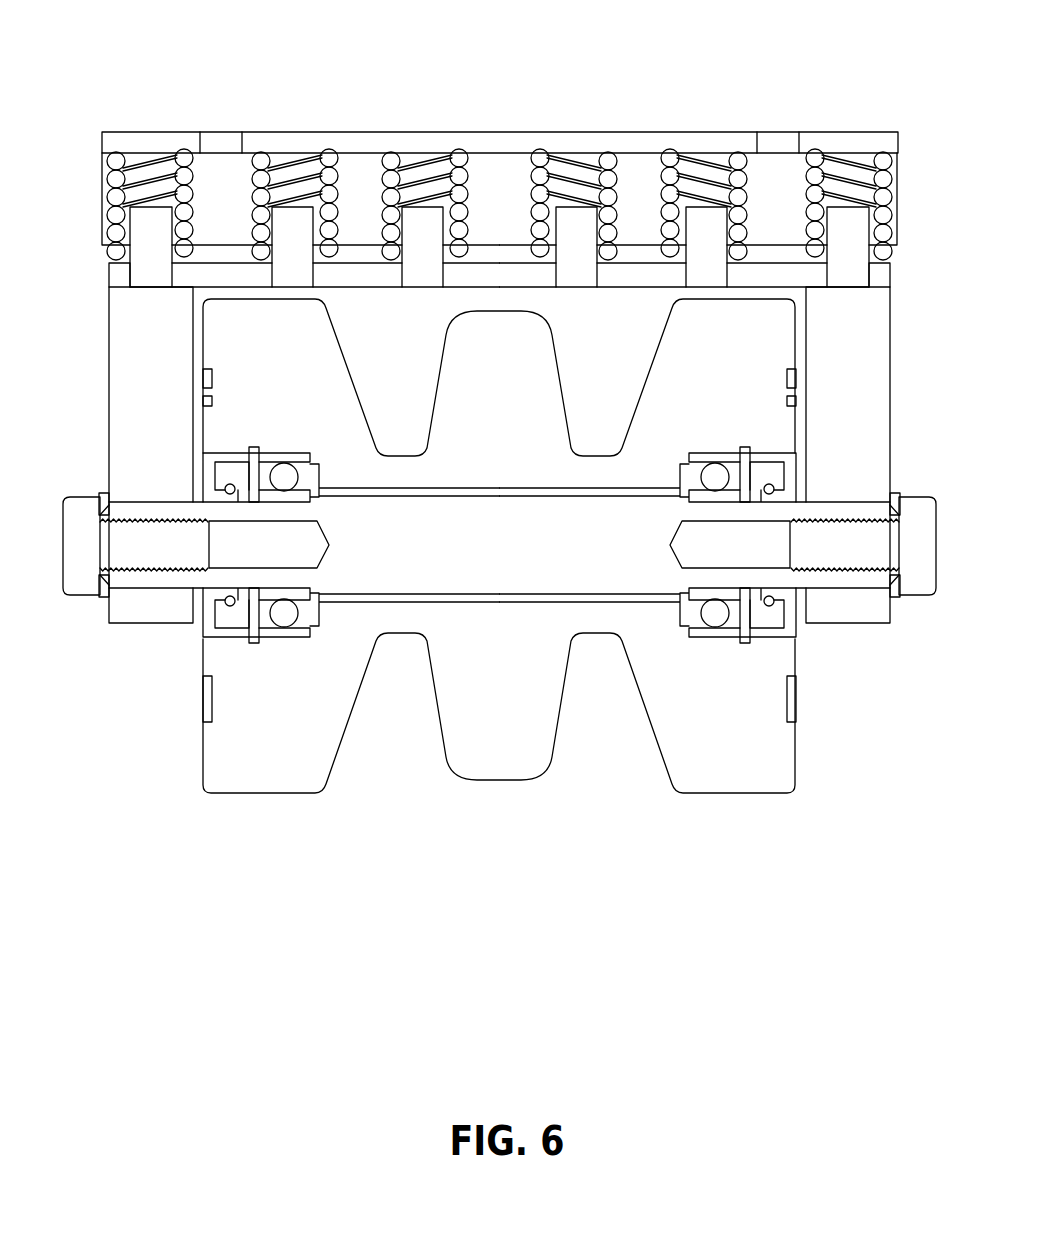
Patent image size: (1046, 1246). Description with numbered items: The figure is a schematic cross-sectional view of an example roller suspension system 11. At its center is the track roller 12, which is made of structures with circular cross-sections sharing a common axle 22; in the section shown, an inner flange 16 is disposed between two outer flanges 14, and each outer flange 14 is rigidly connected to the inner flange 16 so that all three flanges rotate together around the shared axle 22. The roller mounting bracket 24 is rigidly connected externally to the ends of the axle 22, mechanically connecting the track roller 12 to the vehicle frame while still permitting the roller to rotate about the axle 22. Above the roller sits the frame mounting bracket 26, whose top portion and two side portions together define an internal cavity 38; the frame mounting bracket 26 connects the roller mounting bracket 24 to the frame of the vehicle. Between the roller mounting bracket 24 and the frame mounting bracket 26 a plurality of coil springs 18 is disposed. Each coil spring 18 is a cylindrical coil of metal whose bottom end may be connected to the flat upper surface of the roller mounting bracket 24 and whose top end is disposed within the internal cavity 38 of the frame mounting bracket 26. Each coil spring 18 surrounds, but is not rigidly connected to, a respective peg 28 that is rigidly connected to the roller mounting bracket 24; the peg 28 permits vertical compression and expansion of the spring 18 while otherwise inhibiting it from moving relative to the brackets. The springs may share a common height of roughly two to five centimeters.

The roller suspension system 11 is at (797, 53).
The track roller 12 is at (502, 809).
The outer flange 14 is at (257, 387).
The inner flange 16 is at (484, 697).
The coil spring 18 is at (423, 174).
The axle 22 is at (484, 560).
The roller mounting bracket 24 is at (137, 427).
The frame mounting bracket 26 is at (571, 142).
The peg 28 is at (279, 254).
The internal cavity 38 is at (484, 212).